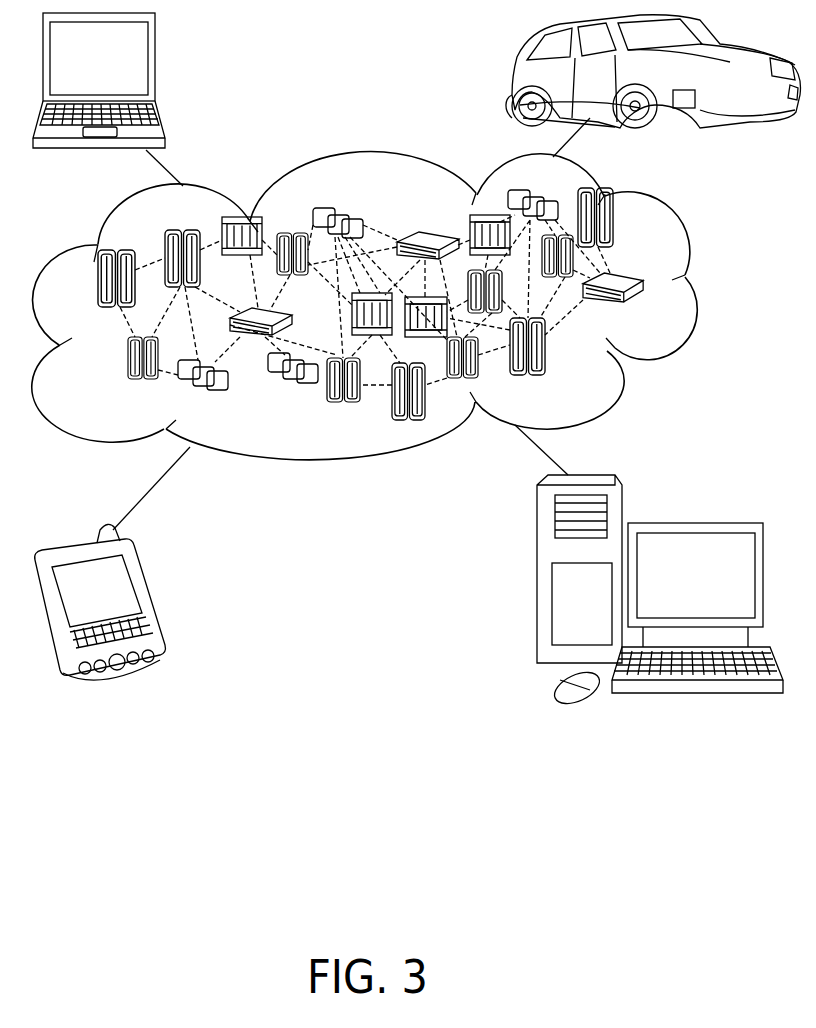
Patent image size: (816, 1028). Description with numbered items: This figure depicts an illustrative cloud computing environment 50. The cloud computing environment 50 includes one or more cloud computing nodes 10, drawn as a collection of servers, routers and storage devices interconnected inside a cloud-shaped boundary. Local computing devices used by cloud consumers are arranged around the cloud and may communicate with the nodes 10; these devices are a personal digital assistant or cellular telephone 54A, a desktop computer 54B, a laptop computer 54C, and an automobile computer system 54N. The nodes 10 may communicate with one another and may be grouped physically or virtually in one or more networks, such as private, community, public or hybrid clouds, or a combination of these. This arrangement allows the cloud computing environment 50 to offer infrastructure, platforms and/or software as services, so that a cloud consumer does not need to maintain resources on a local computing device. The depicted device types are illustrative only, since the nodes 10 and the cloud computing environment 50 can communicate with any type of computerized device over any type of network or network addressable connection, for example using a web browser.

The cloud computing environment 50 is at (695, 285).
The cloud computing node 10 is at (647, 313).
The personal digital assistant (PDA) or cellular telephone 54A is at (152, 598).
The desktop computer 54B is at (697, 522).
The laptop computer 54C is at (157, 62).
The automobile computer system 54N is at (518, 78).